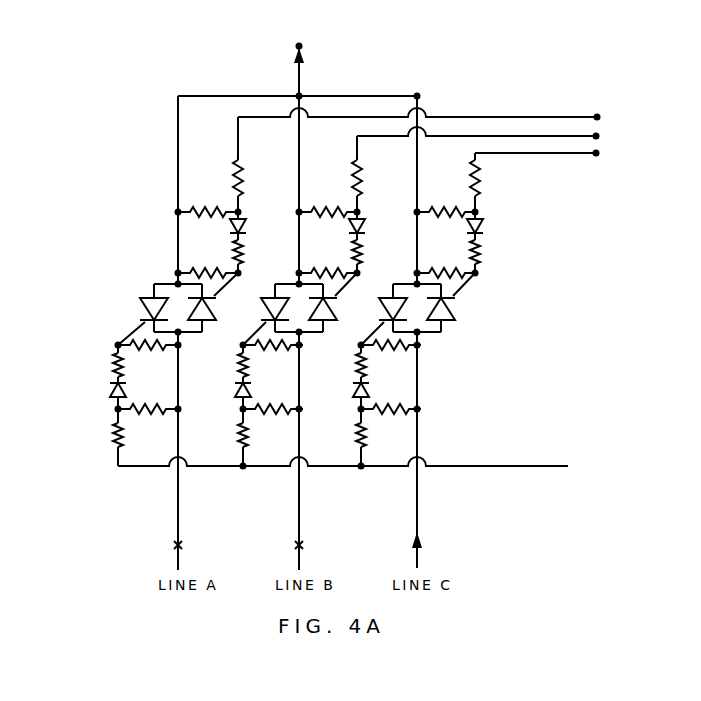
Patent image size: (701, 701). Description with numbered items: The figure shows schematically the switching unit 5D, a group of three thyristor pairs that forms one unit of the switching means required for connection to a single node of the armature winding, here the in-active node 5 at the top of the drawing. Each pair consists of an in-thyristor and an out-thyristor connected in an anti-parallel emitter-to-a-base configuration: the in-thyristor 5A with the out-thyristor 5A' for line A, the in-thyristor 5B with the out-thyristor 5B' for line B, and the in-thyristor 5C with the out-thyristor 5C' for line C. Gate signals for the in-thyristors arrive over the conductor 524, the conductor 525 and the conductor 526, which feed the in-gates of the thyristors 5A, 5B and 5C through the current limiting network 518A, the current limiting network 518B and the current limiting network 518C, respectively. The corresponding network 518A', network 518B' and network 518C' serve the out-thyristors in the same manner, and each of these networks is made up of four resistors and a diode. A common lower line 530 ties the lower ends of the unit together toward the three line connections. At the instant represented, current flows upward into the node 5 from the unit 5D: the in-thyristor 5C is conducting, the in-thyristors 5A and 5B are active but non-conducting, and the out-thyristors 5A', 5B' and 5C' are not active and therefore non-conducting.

The in-active node 5 is at (303, 45).
The conductor 524 is at (571, 109).
The conductor 525 is at (570, 128).
The conductor 526 is at (570, 159).
The current limiting network 518A is at (260, 195).
The current limiting network 518B is at (377, 204).
The current limiting network 518C is at (501, 213).
The in-thyristor 5A is at (217, 302).
The out-thyristor 5A' is at (132, 314).
The in-thyristor 5B is at (333, 319).
The out-thyristor 5B' is at (266, 295).
The in-thyristor 5C is at (459, 306).
The out-thyristor 5C' is at (384, 295).
The current limiting network 518A' is at (79, 405).
The current limiting network 518B' is at (219, 405).
The current limiting network 518C' is at (337, 405).
The common bus line 530 is at (502, 468).
The switching unit 5D is at (484, 511).